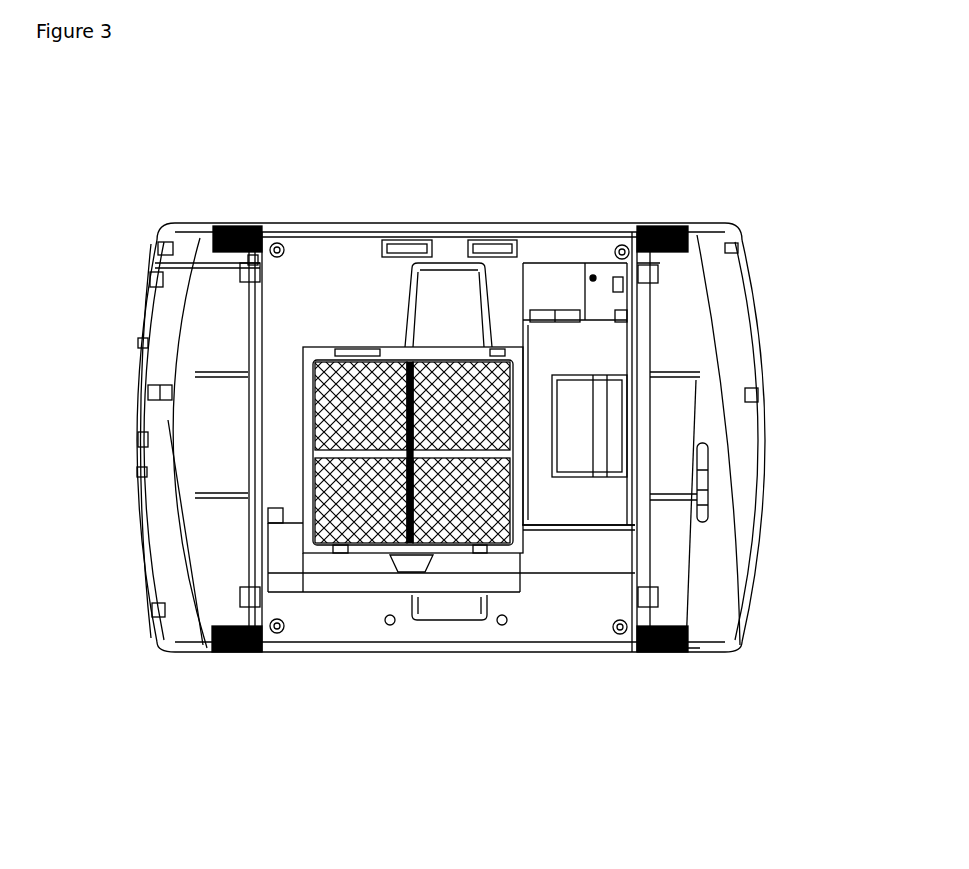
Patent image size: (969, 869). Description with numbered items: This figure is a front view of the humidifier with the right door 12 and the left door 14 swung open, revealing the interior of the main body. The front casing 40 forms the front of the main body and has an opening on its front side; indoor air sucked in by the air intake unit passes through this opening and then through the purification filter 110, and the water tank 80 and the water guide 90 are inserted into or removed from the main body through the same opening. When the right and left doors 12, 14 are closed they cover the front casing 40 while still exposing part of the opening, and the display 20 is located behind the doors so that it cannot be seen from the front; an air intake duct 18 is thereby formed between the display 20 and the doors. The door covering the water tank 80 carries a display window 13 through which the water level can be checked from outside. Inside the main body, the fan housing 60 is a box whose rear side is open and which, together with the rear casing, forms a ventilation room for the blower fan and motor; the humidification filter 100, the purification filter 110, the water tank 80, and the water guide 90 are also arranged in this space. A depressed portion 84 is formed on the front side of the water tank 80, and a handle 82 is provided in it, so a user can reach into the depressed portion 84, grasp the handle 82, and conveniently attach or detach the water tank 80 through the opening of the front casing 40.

The right door 12 is at (740, 424).
The display window 13 is at (703, 473).
The left door 14 is at (140, 500).
The air intake duct 18 is at (143, 343).
The display 20 is at (160, 424).
The front casing 40 is at (310, 285).
The fan housing 60 is at (553, 285).
The water tank 80 is at (594, 510).
The handle 82 is at (575, 432).
The depressed portion 84 is at (688, 650).
The water guide 90 is at (617, 553).
The humidification filter 100 is at (353, 565).
The purification filter 110 is at (332, 553).